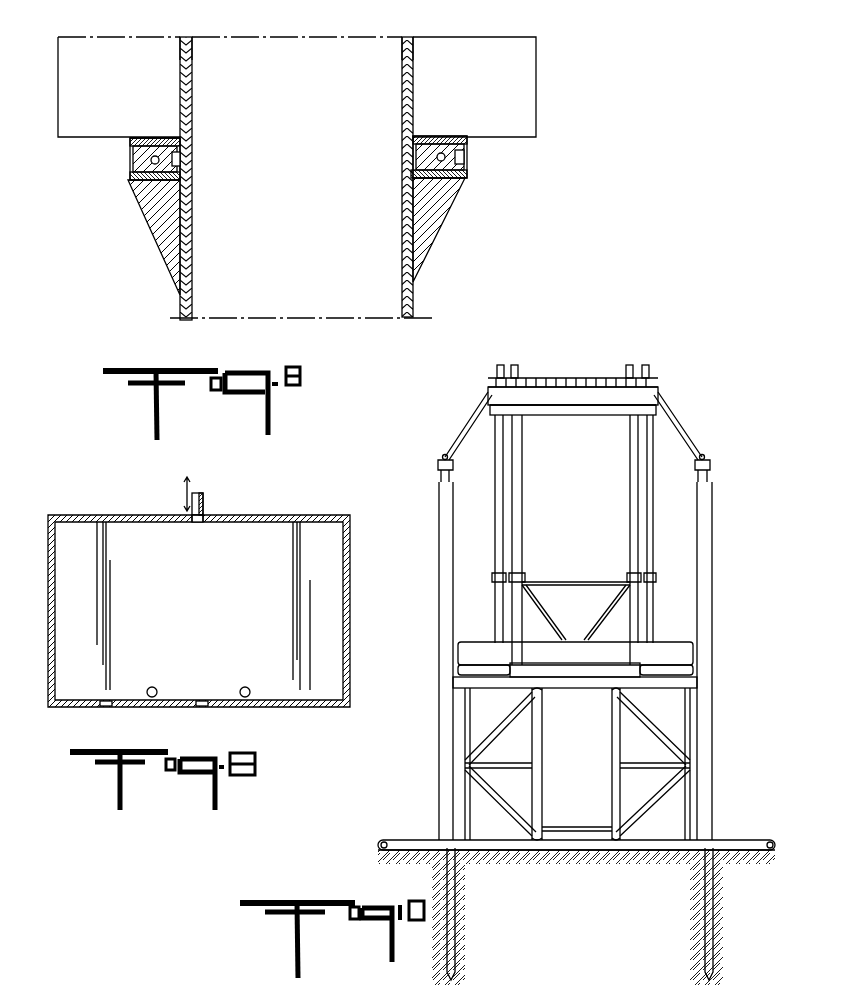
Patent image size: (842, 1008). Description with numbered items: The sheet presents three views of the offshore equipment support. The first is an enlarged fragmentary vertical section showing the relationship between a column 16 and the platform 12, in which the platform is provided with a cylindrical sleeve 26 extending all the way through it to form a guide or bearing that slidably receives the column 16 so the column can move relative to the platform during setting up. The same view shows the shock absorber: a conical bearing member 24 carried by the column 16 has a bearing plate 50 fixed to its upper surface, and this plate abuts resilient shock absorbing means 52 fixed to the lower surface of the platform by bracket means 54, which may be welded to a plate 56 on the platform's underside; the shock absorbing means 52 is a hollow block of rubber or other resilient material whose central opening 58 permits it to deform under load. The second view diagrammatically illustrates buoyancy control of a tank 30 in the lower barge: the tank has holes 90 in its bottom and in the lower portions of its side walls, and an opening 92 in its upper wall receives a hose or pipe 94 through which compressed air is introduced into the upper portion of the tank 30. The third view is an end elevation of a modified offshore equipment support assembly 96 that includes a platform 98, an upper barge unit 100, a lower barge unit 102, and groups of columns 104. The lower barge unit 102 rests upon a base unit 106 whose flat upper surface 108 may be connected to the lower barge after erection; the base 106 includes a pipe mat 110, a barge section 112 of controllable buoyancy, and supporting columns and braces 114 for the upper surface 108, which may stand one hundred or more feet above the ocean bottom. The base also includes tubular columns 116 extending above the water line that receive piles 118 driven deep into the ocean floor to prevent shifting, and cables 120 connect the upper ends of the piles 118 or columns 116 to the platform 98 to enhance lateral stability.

In FIG. 8, the floating hull 12 is at (494, 46).
In FIG. 8, the column 16 is at (192, 48).
In FIG. 8, the conical bearing member 24 is at (162, 240).
In FIG. 8, the cylindrical sleeve 26 is at (180, 52).
In FIG. 9, the tank 30 is at (312, 515).
In FIG. 8, the bearing plate 50 is at (301, 154).
In FIG. 8, the shock absorbing means 52 is at (133, 165).
In FIG. 8, the bracket means 54 is at (130, 150).
In FIG. 8, the plate 56 is at (152, 140).
In FIG. 8, the opening 58 is at (180, 158).
In FIG. 9, the holes 90 is at (108, 700).
In FIG. 9, the opening 92 is at (208, 522).
In FIG. 9, the pipe 94 is at (203, 510).
In FIG. 10, the offshore equipment support assembly 96 is at (666, 385).
In FIG. 10, the platform 98 is at (545, 423).
In FIG. 10, the upper barge unit 100 is at (486, 645).
In FIG. 10, the lower barge unit 102 is at (570, 682).
In FIG. 10, the columns 104 is at (522, 508).
In FIG. 10, the base unit 106 is at (547, 764).
In FIG. 10, the upper surface 108 is at (453, 684).
In FIG. 10, the pipe mat 110 is at (750, 850).
In FIG. 10, the barge section 112 is at (582, 842).
In FIG. 10, the supporting columns and braces 114 is at (606, 755).
In FIG. 10, the tubular columns 116 is at (440, 636).
In FIG. 10, the piles 118 is at (710, 478).
In FIG. 10, the cables 120 is at (448, 442).